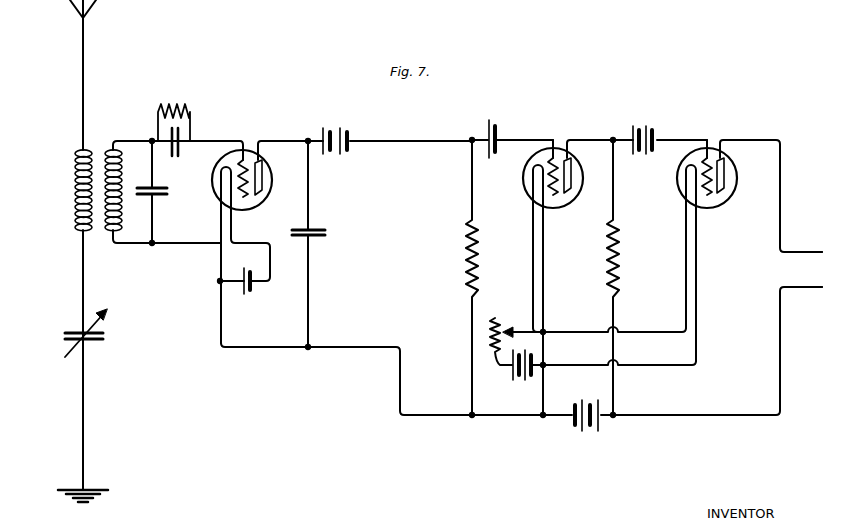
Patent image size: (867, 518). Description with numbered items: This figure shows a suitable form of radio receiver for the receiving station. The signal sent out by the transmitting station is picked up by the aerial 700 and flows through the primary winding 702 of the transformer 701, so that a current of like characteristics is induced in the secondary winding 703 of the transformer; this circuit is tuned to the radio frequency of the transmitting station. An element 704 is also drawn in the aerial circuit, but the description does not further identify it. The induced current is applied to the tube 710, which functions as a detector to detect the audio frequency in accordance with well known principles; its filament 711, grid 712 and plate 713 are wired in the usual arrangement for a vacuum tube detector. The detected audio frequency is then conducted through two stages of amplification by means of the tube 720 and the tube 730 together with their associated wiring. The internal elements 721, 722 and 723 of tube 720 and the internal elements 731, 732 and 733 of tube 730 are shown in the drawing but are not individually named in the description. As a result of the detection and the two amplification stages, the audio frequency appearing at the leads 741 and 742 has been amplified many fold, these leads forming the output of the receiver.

The aerial 700 is at (87, 18).
The transformer 701 is at (105, 150).
The primary winding 702 is at (67, 190).
The secondary winding 703 is at (146, 192).
The variable condenser 704 is at (86, 413).
The tube 710 is at (249, 231).
The filament 711 is at (224, 197).
The grid 712 is at (243, 197).
The plate 713 is at (266, 180).
The tube 720 is at (555, 266).
The grid of second tube 721 is at (532, 186).
The filament of second tube 722 is at (555, 196).
The plate of second tube 723 is at (575, 178).
The tube 730 is at (735, 240).
The grid of third tube 731 is at (688, 186).
The filament of third tube 732 is at (709, 196).
The plate of third tube 733 is at (728, 180).
The lead 741 is at (806, 243).
The lead 742 is at (807, 298).